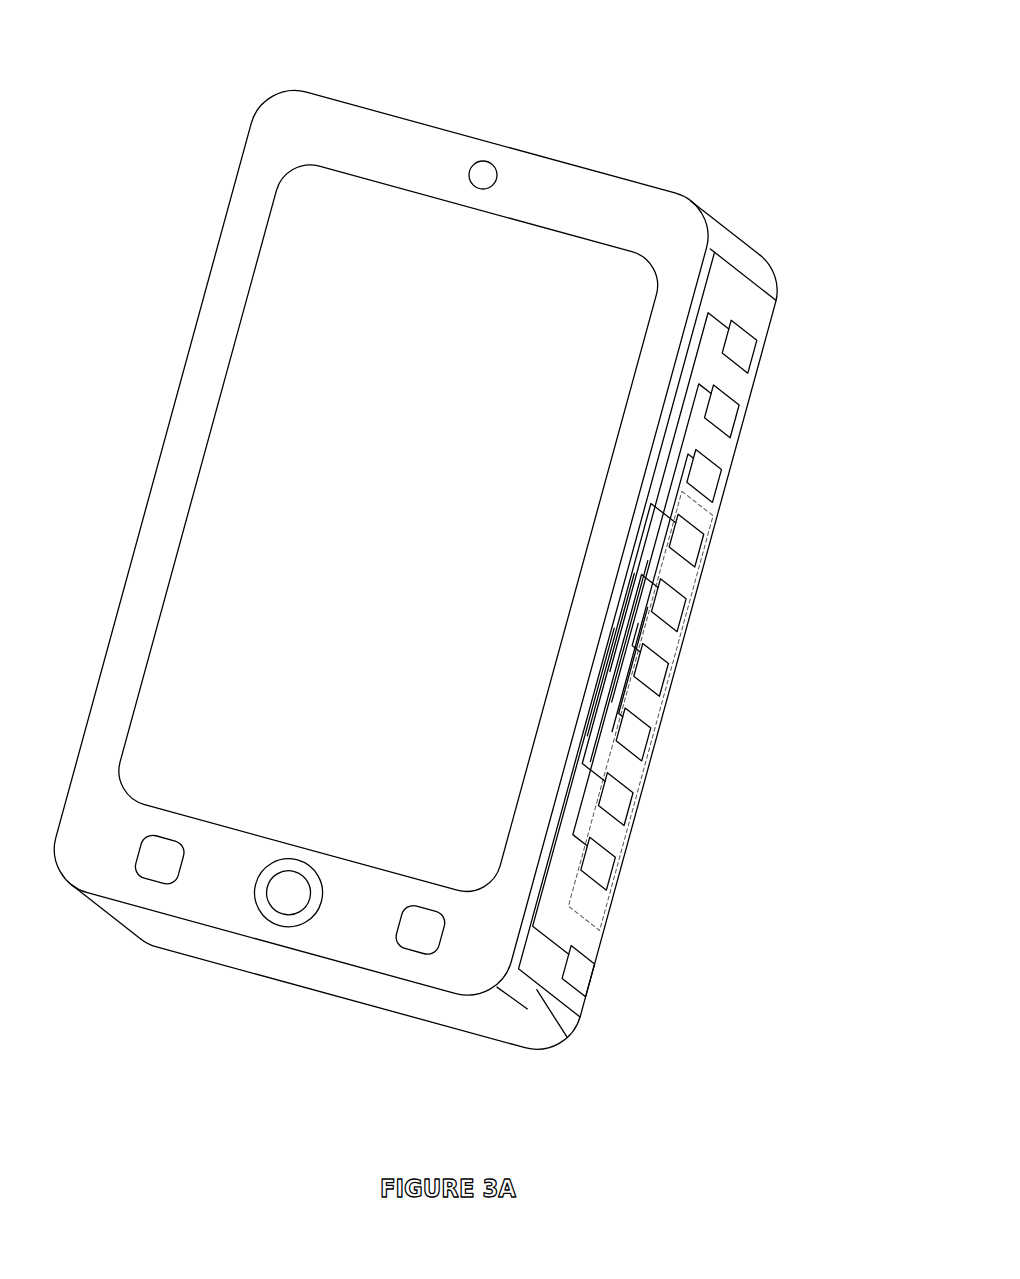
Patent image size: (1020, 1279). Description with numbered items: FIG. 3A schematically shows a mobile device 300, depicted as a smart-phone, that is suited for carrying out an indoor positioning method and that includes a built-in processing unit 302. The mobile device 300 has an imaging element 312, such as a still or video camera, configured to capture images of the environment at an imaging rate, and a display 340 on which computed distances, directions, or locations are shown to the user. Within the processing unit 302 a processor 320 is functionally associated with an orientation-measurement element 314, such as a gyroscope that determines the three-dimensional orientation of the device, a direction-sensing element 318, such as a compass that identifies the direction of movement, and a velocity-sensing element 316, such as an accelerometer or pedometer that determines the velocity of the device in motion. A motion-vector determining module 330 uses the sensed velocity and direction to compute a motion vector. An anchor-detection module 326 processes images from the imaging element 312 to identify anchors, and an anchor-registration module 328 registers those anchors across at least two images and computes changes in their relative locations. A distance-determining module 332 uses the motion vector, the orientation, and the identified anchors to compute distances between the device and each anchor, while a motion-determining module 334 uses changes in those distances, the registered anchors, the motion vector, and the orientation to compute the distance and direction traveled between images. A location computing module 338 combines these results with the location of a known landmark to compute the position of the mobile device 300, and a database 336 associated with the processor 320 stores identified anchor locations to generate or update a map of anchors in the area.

The mobile device 300 is at (155, 112).
The processing unit 302 is at (526, 1009).
The imaging element 312 is at (485, 160).
The display 340 is at (590, 275).
The processor 320 is at (650, 710).
The orientation-measurement element 314 is at (756, 355).
The direction-sensing element 318 is at (737, 420).
The velocity-sensing element 316 is at (720, 485).
The motion-vector determining module 330 is at (704, 550).
The distance-determining module 332 is at (688, 615).
The motion-determining module 334 is at (668, 685).
The anchor-detection module 326 is at (650, 748).
The anchor-registration module 328 is at (632, 812).
The location computing module 338 is at (616, 878).
The database 336 is at (598, 988).